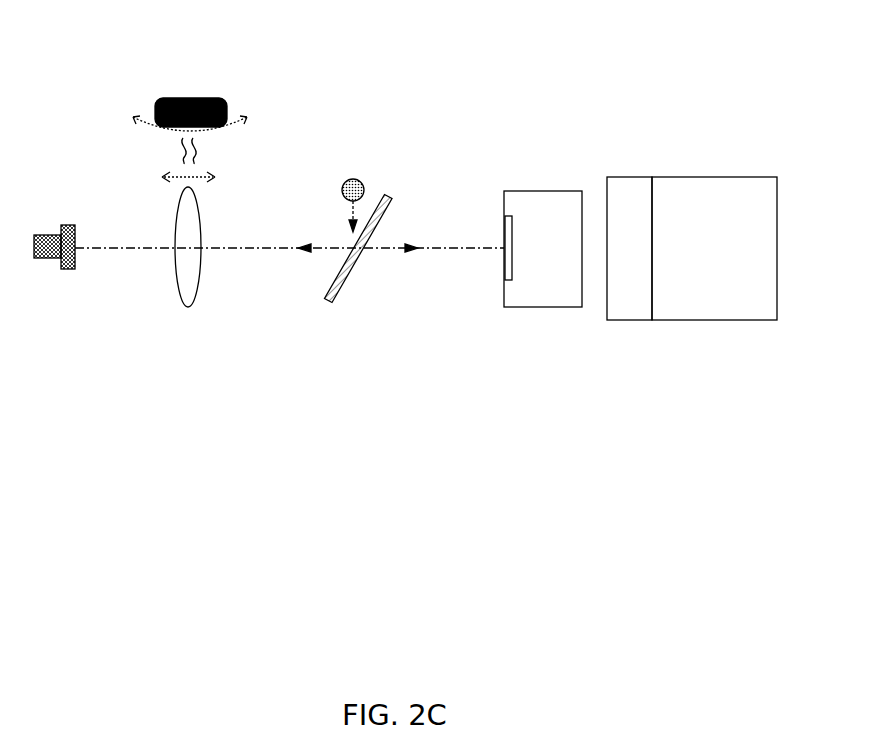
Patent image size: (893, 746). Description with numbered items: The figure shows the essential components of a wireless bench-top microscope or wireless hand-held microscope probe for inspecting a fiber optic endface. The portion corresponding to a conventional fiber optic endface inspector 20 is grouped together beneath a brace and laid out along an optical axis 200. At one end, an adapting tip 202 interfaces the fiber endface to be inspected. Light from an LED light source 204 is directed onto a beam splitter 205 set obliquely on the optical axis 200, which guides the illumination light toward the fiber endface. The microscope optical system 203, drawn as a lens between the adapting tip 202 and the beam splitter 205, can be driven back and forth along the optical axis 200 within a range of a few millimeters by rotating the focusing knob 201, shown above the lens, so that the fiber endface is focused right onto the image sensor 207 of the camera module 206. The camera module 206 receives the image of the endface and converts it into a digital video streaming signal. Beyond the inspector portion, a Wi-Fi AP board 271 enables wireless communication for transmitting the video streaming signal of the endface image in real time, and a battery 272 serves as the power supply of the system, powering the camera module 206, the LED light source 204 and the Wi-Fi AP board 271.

The fiber optic endface inspector 20 is at (535, 383).
The optical axis 200 is at (255, 248).
The focusing knob 201 is at (195, 98).
The adapting tip 202 is at (68, 269).
The microscope optical system 203 is at (186, 292).
The LED light source 204 is at (352, 180).
The beam splitter 205 is at (388, 197).
The camera module 206 is at (520, 203).
The image sensor 207 is at (503, 270).
The Wi-Fi AP board 271 is at (628, 187).
The battery 272 is at (707, 203).